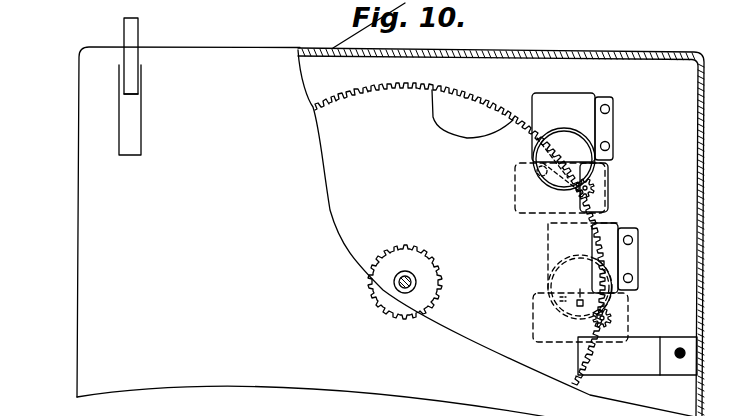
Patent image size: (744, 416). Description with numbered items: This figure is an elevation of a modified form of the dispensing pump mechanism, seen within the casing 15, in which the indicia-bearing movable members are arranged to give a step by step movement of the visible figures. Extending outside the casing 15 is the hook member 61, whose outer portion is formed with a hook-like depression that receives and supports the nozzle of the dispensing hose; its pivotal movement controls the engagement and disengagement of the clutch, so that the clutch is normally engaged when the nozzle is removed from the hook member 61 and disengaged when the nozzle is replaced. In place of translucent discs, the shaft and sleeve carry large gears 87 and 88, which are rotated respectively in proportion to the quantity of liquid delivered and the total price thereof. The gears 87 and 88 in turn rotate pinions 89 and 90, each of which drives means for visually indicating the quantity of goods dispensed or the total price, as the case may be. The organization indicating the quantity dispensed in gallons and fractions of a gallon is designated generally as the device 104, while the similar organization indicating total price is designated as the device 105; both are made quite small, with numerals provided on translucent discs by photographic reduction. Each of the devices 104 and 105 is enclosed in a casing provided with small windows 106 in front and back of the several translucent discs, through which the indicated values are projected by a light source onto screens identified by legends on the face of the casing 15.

The casing 15 is at (87, 208).
The hook member 61 is at (135, 42).
The large gear 87 is at (447, 145).
The large gear 88 is at (447, 106).
The pinion 89 is at (594, 188).
The pinion 90 is at (611, 316).
The quantity indicating organization 104 is at (533, 313).
The total price indicating organization 105 is at (517, 212).
The windows 106 is at (574, 228).